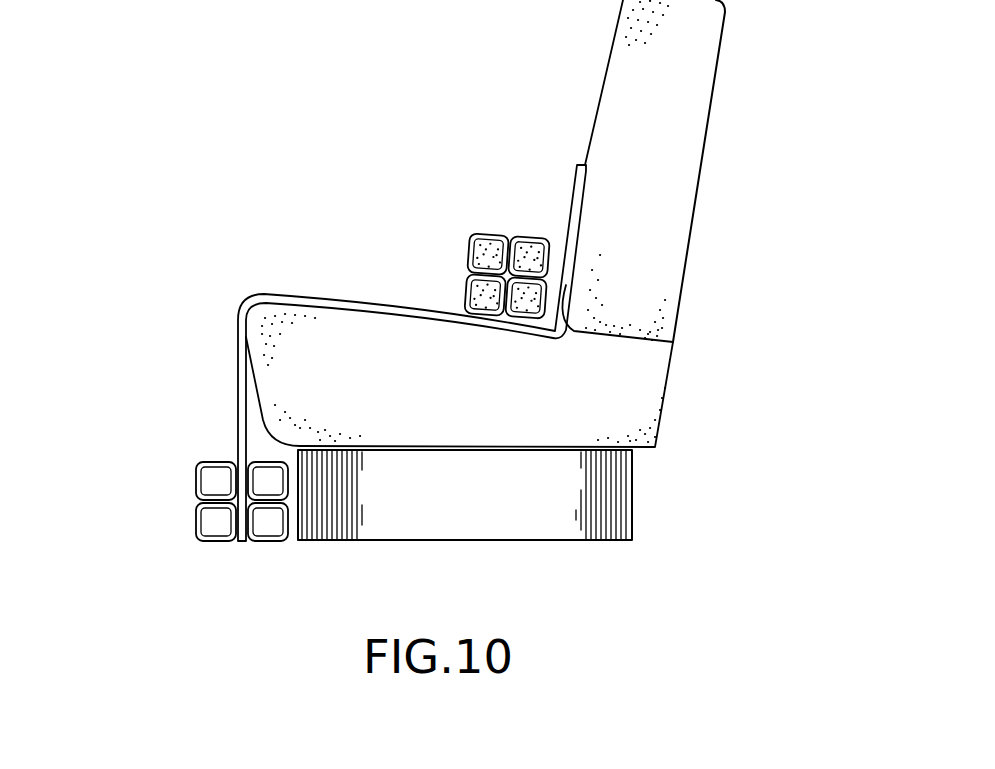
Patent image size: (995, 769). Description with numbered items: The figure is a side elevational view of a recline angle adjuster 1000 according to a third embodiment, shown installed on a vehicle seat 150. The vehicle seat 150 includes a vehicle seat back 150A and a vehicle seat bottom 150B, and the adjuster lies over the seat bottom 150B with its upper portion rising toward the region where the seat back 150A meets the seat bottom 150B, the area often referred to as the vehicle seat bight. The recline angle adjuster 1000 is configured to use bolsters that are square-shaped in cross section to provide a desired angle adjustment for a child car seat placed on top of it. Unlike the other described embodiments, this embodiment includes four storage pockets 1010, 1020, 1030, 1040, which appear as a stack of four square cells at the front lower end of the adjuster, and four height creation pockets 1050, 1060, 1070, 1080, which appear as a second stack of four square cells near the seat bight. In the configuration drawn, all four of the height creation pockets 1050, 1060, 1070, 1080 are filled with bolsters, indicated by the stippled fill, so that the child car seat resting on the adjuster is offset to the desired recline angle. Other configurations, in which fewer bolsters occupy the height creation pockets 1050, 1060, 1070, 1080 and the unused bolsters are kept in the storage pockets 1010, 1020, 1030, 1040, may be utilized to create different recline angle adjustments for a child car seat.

The vehicle seat 150 is at (527, 223).
The vehicle seat back 150A is at (672, 146).
The vehicle seat bottom 150B is at (633, 378).
The recline angle adjuster 1000 is at (297, 294).
The storage pocket 1010 is at (213, 483).
The storage pocket 1020 is at (213, 521).
The storage pocket 1030 is at (262, 478).
The storage pocket 1040 is at (268, 527).
The height creation pocket 1050 is at (463, 292).
The height creation pocket 1060 is at (519, 321).
The height creation pocket 1070 is at (488, 237).
The height creation pocket 1080 is at (527, 237).